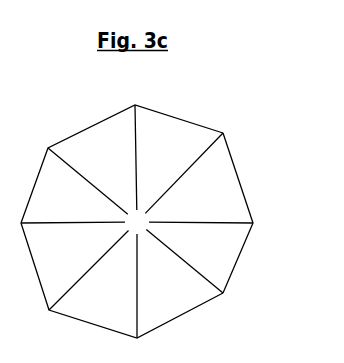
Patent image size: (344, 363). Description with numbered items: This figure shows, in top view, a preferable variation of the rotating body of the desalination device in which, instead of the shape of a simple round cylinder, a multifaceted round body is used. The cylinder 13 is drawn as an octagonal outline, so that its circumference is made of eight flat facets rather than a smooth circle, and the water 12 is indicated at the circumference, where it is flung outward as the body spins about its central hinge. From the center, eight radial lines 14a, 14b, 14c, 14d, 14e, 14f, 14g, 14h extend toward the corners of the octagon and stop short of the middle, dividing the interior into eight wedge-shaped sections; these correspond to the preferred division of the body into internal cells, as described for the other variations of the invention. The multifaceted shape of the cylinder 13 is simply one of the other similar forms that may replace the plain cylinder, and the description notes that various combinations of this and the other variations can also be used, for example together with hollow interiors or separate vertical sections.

The water 12 is at (246, 213).
The cylinder 13 is at (122, 218).
The radial segment 14a is at (140, 157).
The radial segment 14b is at (184, 173).
The radial segment 14c is at (201, 212).
The radial segment 14d is at (184, 261).
The radial segment 14e is at (140, 286).
The radial segment 14f is at (89, 271).
The radial segment 14g is at (73, 227).
The radial segment 14h is at (88, 181).